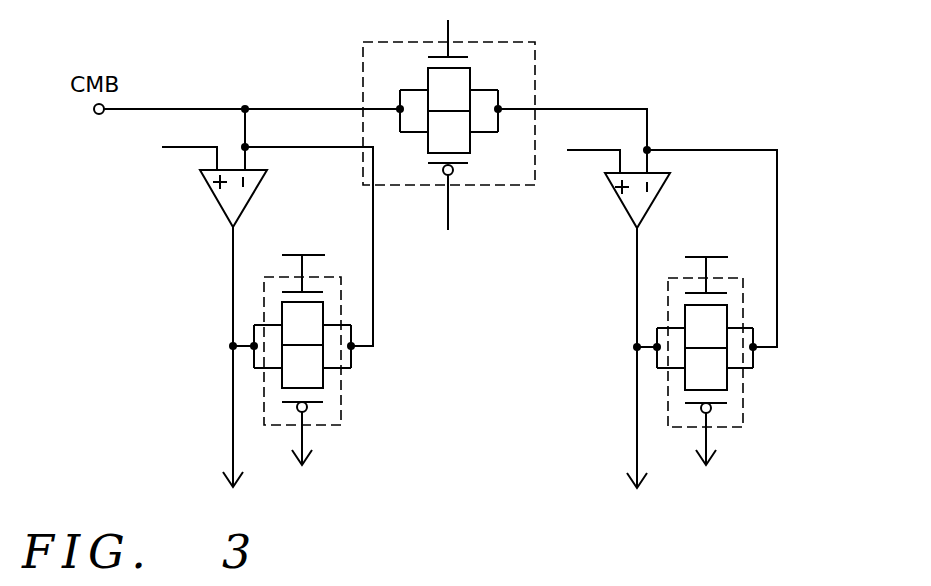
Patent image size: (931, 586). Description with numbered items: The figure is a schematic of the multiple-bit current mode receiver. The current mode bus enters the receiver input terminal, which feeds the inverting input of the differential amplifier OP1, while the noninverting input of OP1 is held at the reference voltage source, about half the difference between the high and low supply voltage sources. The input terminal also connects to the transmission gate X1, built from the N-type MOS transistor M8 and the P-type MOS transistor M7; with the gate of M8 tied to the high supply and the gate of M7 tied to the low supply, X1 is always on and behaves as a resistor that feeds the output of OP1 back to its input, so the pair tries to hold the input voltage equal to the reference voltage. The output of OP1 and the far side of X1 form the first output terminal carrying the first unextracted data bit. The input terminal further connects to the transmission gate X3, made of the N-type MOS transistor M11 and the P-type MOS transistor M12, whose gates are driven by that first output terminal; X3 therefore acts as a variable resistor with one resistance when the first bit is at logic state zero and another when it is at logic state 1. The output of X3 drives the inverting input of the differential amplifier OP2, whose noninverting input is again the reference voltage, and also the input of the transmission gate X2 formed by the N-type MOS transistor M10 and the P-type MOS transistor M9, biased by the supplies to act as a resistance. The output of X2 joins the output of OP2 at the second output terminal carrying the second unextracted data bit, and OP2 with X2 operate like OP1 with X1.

The switch circuit (transfer gate X3) 1 is at (477, 120).
The transmission gate X1 is at (341, 398).
The transmission gate X2 is at (743, 400).
The transmission gate X3 is at (535, 43).
The P-type MOS transistor M7 is at (302, 366).
The N-type MOS transistor M8 is at (302, 323).
The P-type MOS transistor M9 is at (706, 369).
The N-type MOS transistor M10 is at (706, 326).
The N-type MOS transistor M11 is at (449, 89).
The P-type MOS transistor M12 is at (449, 132).
The differential amplifier OP1 is at (207, 306).
The differential amplifier OP2 is at (636, 307).